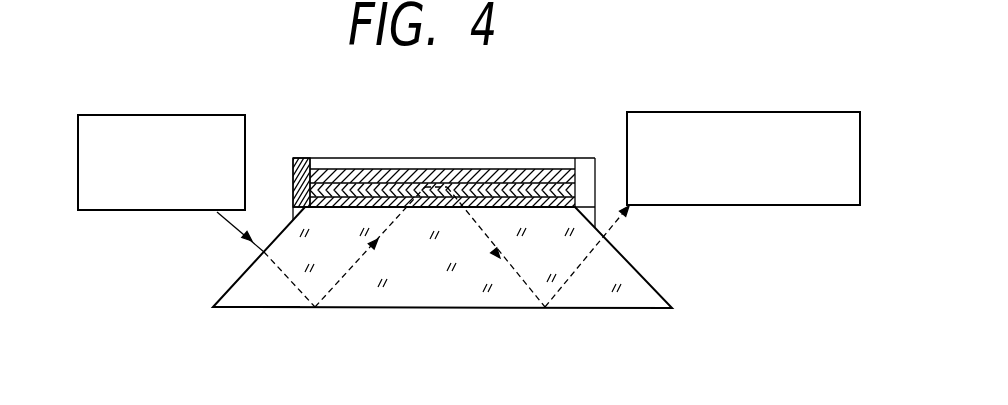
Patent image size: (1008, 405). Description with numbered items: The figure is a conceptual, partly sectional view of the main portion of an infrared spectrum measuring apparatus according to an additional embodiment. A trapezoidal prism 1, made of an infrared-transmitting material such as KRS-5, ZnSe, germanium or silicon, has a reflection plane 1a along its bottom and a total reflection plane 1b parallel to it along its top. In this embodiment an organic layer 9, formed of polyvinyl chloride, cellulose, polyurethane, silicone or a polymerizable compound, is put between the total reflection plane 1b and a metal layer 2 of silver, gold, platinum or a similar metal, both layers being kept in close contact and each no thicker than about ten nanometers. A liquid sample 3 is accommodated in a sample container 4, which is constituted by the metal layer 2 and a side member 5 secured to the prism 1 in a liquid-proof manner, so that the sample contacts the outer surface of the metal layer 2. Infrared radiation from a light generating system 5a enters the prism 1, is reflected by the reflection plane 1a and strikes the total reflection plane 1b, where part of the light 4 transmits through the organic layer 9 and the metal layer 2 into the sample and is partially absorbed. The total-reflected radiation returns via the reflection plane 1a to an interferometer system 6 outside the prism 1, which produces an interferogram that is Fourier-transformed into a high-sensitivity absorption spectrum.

The trapezoidal prism 1 is at (453, 296).
The reflection plane 1a is at (248, 307).
The total reflection plane 1b is at (329, 207).
The metal layer 2 is at (450, 187).
The liquid sample 3 is at (387, 169).
The sample container 4 is at (431, 220).
The side member 5 is at (302, 158).
The light generating system 5a is at (205, 115).
The interferometer system 6 is at (830, 112).
The organic layer 9 is at (538, 190).